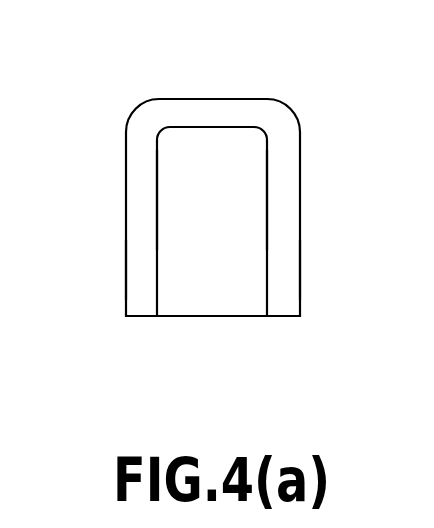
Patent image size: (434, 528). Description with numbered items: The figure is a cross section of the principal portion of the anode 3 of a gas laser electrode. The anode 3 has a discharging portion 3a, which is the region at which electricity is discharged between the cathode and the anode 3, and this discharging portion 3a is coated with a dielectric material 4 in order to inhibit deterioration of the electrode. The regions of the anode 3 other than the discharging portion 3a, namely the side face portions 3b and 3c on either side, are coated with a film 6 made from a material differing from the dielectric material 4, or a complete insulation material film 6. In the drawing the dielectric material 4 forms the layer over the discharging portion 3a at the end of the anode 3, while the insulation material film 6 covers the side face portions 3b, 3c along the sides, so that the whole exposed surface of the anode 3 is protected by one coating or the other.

The anode 3 is at (193, 309).
The discharging portion 3a is at (188, 125).
The side face portion 3b is at (157, 197).
The side face portion 3c is at (268, 197).
The dielectric material 4 is at (248, 107).
The insulation material film 6 is at (130, 271).